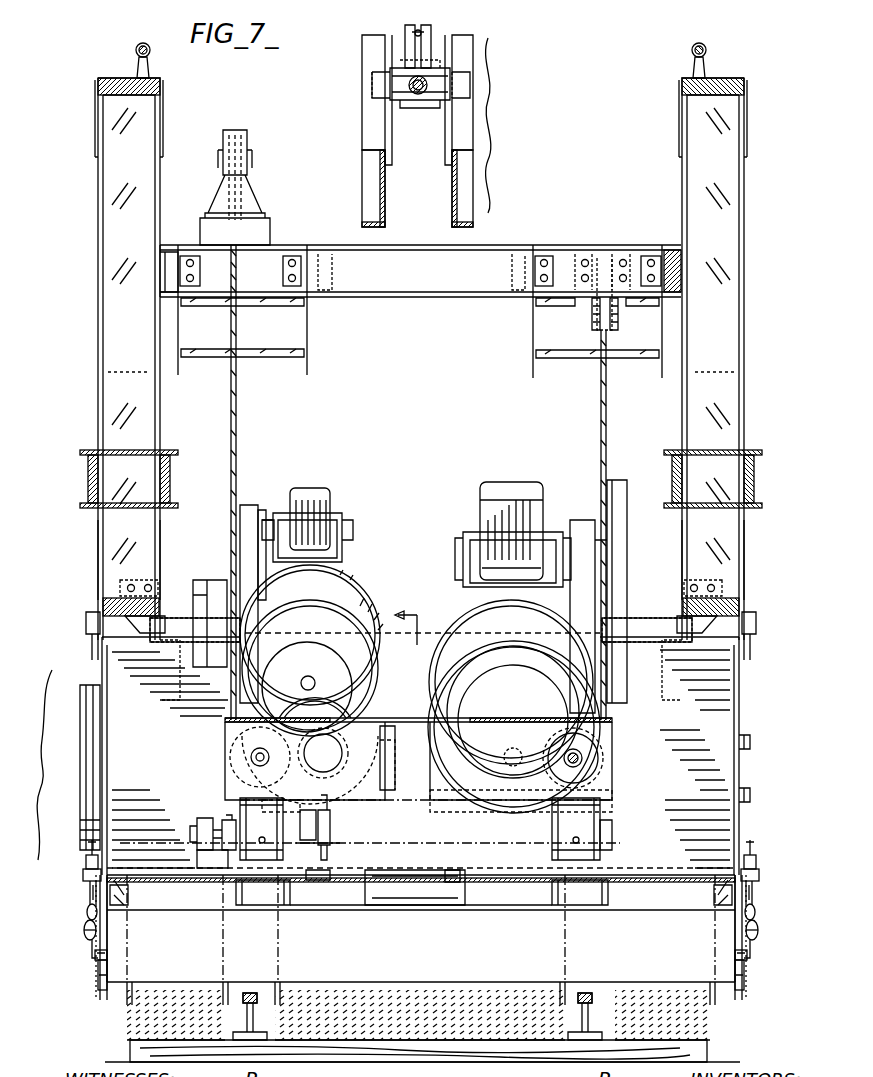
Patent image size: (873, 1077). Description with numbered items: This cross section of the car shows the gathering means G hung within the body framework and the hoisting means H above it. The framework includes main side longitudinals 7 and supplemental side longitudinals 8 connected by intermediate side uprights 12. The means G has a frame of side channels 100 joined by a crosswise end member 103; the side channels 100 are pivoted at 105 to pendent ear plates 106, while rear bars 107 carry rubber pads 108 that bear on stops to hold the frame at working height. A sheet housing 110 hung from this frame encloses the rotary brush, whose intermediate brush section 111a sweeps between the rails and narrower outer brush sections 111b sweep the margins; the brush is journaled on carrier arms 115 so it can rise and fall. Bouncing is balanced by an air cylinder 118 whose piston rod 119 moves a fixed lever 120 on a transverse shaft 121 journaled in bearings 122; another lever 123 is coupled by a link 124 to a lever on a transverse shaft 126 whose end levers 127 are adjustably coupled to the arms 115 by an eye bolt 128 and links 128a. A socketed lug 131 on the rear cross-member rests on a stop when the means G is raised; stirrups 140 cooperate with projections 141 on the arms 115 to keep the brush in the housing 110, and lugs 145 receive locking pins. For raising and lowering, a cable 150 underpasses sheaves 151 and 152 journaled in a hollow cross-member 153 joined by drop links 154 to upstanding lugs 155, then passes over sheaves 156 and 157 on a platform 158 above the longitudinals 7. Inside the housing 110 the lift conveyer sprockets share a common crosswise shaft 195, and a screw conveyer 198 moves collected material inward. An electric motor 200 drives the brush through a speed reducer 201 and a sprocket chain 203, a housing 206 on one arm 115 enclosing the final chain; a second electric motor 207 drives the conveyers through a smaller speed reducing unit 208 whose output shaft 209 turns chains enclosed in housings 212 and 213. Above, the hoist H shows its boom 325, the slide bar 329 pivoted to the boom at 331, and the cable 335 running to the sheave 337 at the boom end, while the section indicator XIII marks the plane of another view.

The main side longitudinals 7 is at (88, 480).
The supplemental side longitudinals 8 is at (130, 78).
The intermediate side upright 12 is at (120, 398).
The side channels 100 is at (118, 886).
The crosswise end member 103 is at (480, 907).
The pivot 105 is at (88, 630).
The pendent ear plates 106 is at (98, 552).
The bars 107 is at (240, 884).
The pads 108 is at (260, 906).
The sheet housing 110 is at (722, 688).
The intermediate brush section 111a is at (405, 995).
The outer brush sections 111b is at (178, 995).
The carrier arms 115 is at (100, 990).
The air cylinder 118 is at (312, 712).
The piston rod 119 is at (332, 762).
The fixed lever 120 is at (326, 820).
The transverse shaft 121 is at (335, 836).
The bearings 122 is at (200, 832).
The lever 123 is at (222, 828).
The link 124 is at (205, 858).
The transverse shaft 126 is at (452, 871).
The levers 127 is at (85, 862).
The eye bolt 128 is at (88, 905).
The links 128a is at (84, 925).
The socketed lug 131 is at (412, 906).
The stirrups 140 is at (99, 975).
The projections 141 is at (97, 955).
The lugs 145 is at (126, 898).
The cable 150 is at (238, 410).
The sheave 151 is at (552, 752).
The sheave 152 is at (236, 728).
The hollow cross-member 153 is at (320, 757).
The drop links 154 is at (250, 815).
The upstanding lugs 155 is at (604, 836).
The sheave 156 is at (250, 152).
The sheave 157 is at (606, 322).
The platform 158 is at (555, 242).
The crosswise shaft 195 is at (750, 742).
The screw conveyer 198 is at (750, 795).
The electric motor 200 is at (514, 706).
The speed reducer 201 is at (513, 534).
The sprocket chain 203 is at (576, 540).
The housing 206 is at (760, 921).
The electric motor 207 is at (311, 650).
The speed reducing unit 208 is at (315, 495).
The output shaft 209 is at (264, 520).
The housing 212 is at (248, 517).
The housing 213 is at (95, 722).
The boom 325 is at (452, 193).
The slide bar 329 is at (425, 95).
The pivotal connection 331 is at (372, 88).
The cable 335 is at (431, 32).
The sheave 337 is at (405, 32).
The gathering means G is at (36, 765).
The hoisting means H is at (420, 120).
The section line XIII is at (427, 626).